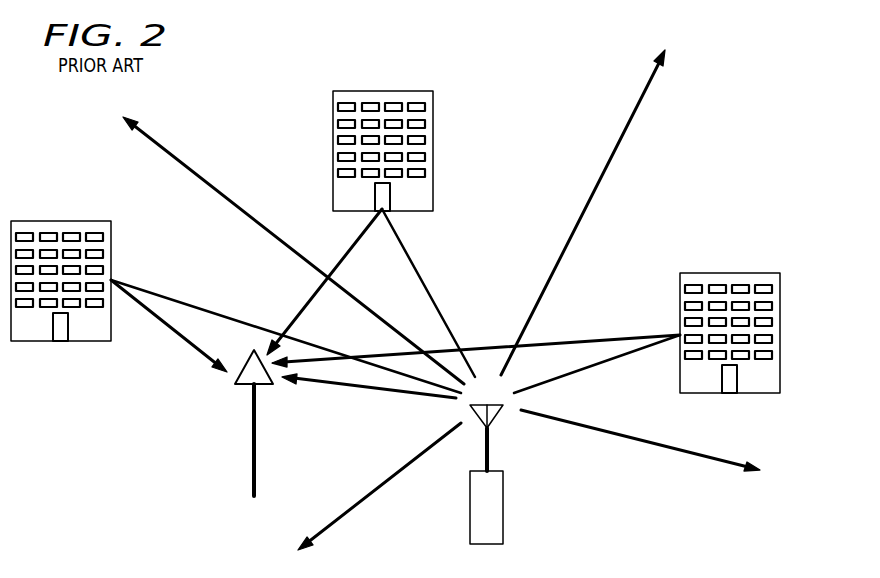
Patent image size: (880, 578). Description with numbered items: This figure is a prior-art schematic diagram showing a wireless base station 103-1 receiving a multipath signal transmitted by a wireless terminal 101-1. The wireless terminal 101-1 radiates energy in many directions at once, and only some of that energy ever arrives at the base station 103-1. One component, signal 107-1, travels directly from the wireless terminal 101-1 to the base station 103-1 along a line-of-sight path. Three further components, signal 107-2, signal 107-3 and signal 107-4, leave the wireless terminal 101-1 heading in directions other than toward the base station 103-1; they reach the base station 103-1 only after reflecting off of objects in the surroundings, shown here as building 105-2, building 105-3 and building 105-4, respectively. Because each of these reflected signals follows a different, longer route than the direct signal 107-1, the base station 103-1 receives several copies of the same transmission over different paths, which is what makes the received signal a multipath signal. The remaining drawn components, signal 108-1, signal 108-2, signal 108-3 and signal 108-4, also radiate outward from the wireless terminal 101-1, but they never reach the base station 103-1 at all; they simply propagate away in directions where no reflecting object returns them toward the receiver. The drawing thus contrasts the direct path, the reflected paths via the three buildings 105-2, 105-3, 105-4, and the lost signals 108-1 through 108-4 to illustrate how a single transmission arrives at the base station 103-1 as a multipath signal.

The wireless terminal 101-1 is at (504, 519).
The base station 103-1 is at (252, 461).
The building 105-2 is at (720, 273).
The building 105-3 is at (378, 91).
The building 105-4 is at (55, 220).
The signal 107-1 is at (360, 400).
The signal 107-2 is at (498, 347).
The signal 107-3 is at (305, 300).
The signal 107-4 is at (172, 332).
The signal 108-1 is at (687, 458).
The signal 108-2 is at (600, 190).
The signal 108-3 is at (190, 162).
The signal 108-4 is at (350, 512).